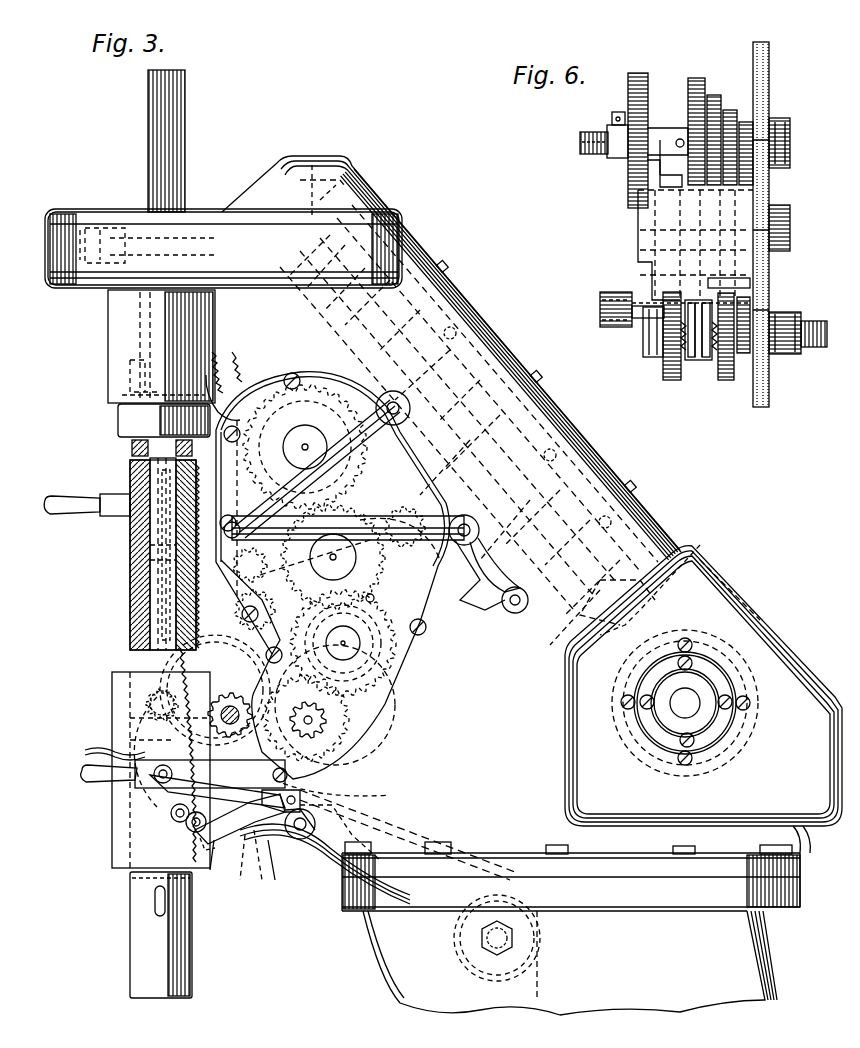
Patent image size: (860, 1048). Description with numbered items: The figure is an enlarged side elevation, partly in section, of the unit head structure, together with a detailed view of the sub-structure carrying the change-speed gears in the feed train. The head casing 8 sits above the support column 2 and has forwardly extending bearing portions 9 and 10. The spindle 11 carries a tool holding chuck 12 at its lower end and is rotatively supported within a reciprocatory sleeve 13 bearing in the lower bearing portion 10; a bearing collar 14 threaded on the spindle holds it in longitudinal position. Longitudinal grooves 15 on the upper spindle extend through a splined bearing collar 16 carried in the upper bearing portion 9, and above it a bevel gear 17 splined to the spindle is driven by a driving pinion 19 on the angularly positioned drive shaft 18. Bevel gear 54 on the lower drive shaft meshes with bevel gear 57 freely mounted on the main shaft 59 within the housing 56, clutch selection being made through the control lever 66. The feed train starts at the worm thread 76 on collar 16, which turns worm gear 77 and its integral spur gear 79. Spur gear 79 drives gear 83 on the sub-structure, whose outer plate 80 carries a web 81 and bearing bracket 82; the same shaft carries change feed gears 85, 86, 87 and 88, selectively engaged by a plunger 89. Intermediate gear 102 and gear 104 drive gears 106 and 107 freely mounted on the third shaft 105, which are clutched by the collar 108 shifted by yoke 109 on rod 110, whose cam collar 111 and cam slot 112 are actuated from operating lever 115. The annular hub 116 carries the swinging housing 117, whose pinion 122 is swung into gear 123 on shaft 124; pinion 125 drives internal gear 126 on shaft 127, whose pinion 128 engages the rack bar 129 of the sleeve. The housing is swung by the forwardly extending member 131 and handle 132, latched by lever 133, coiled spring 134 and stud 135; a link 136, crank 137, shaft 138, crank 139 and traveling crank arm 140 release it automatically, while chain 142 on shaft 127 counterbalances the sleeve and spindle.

In FIG. 3, the support column 2 is at (765, 952).
In FIG. 3, the head casing 8 is at (355, 172).
In FIG. 3, the bearing portion 9 is at (108, 330).
In FIG. 3, the bearing portion 10 is at (112, 838).
In FIG. 3, the spindle 11 is at (152, 606).
In FIG. 3, the tool holding chuck 12 is at (136, 966).
In FIG. 3, the reciprocatory sleeve 13 is at (130, 582).
In FIG. 3, the bearing collar 14 is at (132, 452).
In FIG. 3, the longitudinal grooves 15 is at (148, 131).
In FIG. 3, the splined bearing collar 16 is at (128, 365).
In FIG. 3, the bevel gear 17 is at (75, 238).
In FIG. 3, the drive shaft 18 is at (408, 213).
In FIG. 3, the driving pinion 19 is at (313, 165).
In FIG. 3, the bevel gear 54 is at (722, 560).
In FIG. 3, the housing 56 is at (783, 640).
In FIG. 3, the bevel gear 57 is at (670, 622).
In FIG. 3, the main shaft 59 is at (690, 705).
In FIG. 3, the control lever 66 is at (60, 508).
In FIG. 3, the worm thread 76 is at (120, 392).
In FIG. 3, the worm gear 77 is at (236, 352).
In FIG. 3, the spur gear 79 is at (288, 374).
In FIG. 3, the plate 80 is at (230, 472).
In FIG. 6, the plate 80 is at (769, 84).
In FIG. 6, the web 81 is at (750, 284).
In FIG. 6, the bearing bracket 82 is at (640, 262).
In FIG. 3, the gear 83 is at (280, 408).
In FIG. 6, the gear 83 is at (628, 87).
In FIG. 6, the change feed gear 85 is at (694, 78).
In FIG. 6, the change feed gear 86 is at (713, 95).
In FIG. 6, the change feed gear 87 is at (729, 110).
In FIG. 6, the change feed gear 88 is at (745, 122).
In FIG. 6, the plunger 89 is at (580, 143).
In FIG. 6, the intermediate feed-change gear 102 is at (770, 180).
In FIG. 6, the gear 104 is at (662, 172).
In FIG. 6, the third shaft 105 is at (820, 347).
In FIG. 6, the gear 106 is at (670, 380).
In FIG. 6, the gear 107 is at (728, 380).
In FIG. 6, the clutch collar 108 is at (705, 360).
In FIG. 6, the shifting yoke 109 is at (690, 360).
In FIG. 6, the rod 110 is at (636, 304).
In FIG. 6, the cam collar 111 is at (644, 335).
In FIG. 6, the cam slot 112 is at (600, 298).
In FIG. 3, the operating lever 115 is at (130, 560).
In FIG. 6, the annular hub 116 is at (788, 354).
In FIG. 3, the swinging housing 117 is at (372, 740).
In FIG. 3, the pinion 122 is at (365, 752).
In FIG. 3, the gear 123 is at (178, 682).
In FIG. 3, the shaft 124 is at (222, 712).
In FIG. 3, the pinion 125 is at (150, 704).
In FIG. 3, the internal gear 126 is at (130, 728).
In FIG. 3, the shaft 127 is at (243, 850).
In FIG. 3, the pinion 128 is at (252, 845).
In FIG. 3, the rack bar 129 is at (178, 628).
In FIG. 3, the forwardly extending member 131 is at (300, 845).
In FIG. 3, the handle 132 is at (92, 782).
In FIG. 3, the lever 133 is at (170, 797).
In FIG. 3, the coiled spring 134 is at (86, 751).
In FIG. 3, the stud 135 is at (190, 814).
In FIG. 3, the link 136 is at (214, 842).
In FIG. 3, the crank 137 is at (302, 800).
In FIG. 3, the shaft 138 is at (316, 826).
In FIG. 3, the crank 139 is at (270, 845).
In FIG. 3, the crank arm 140 is at (300, 775).
In FIG. 3, the chain 142 is at (430, 838).